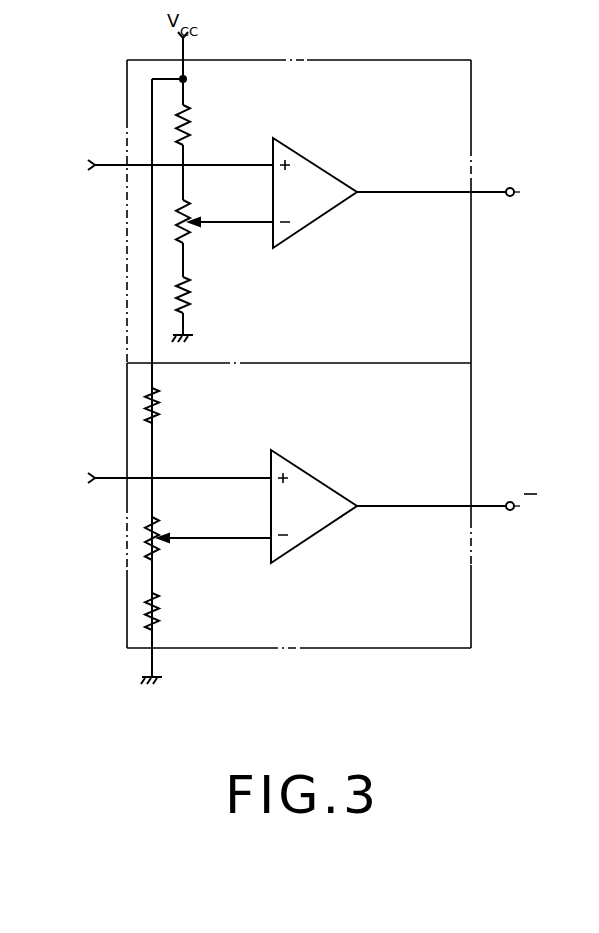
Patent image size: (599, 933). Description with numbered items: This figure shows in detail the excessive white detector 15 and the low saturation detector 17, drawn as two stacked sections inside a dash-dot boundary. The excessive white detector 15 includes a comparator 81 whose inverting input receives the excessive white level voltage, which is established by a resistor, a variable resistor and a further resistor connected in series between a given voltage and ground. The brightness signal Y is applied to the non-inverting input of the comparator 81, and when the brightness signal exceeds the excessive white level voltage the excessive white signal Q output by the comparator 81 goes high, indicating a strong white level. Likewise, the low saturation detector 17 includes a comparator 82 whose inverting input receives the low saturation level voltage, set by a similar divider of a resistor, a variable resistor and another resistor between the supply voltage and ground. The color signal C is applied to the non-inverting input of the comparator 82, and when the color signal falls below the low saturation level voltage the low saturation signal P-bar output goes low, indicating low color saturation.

The excessive white detector 15 is at (297, 223).
The low saturation detector 17 is at (299, 536).
The comparator 81 is at (316, 218).
The comparator 82 is at (333, 489).